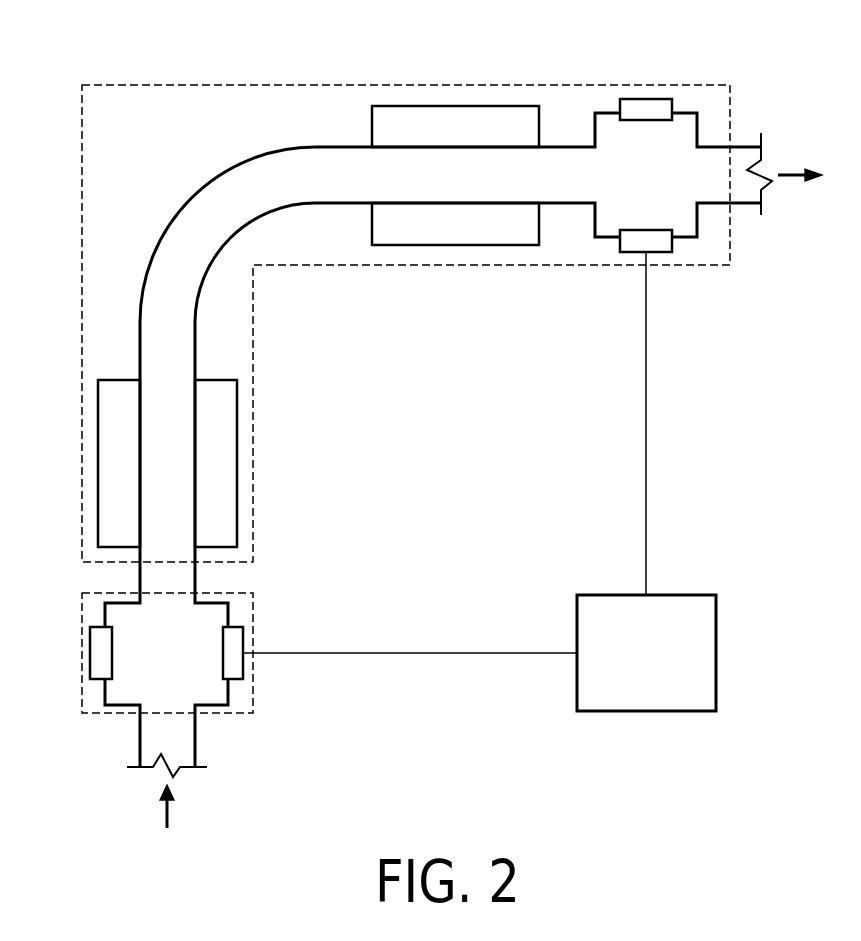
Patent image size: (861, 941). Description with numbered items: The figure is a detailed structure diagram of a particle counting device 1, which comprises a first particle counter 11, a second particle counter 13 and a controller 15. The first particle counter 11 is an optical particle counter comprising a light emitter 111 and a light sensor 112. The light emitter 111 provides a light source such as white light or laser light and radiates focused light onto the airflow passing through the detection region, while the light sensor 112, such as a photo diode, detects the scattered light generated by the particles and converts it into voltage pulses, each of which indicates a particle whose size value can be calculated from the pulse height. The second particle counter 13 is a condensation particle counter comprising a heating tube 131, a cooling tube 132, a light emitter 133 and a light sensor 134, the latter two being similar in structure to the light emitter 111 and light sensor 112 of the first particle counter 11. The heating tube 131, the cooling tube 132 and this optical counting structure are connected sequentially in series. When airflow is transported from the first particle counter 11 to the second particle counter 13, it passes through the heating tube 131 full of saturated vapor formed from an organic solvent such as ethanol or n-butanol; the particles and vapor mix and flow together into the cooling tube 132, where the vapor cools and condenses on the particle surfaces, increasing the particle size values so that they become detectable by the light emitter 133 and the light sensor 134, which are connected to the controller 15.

The particle counting device 1 is at (52, 33).
The first particle counter 11 is at (103, 715).
The light emitter 111 is at (88, 634).
The light sensor 112 is at (245, 634).
The second particle counter 13 is at (135, 85).
The heating tube 131 is at (237, 405).
The cooling tube 132 is at (480, 245).
The light emitter 133 is at (661, 99).
The light sensor 134 is at (661, 252).
The controller 15 is at (688, 711).